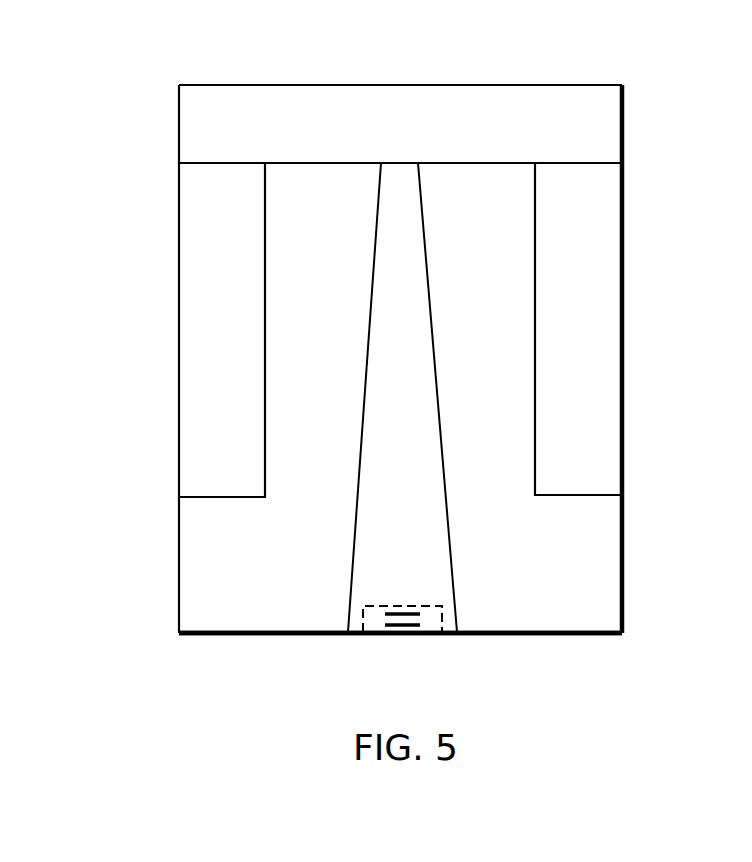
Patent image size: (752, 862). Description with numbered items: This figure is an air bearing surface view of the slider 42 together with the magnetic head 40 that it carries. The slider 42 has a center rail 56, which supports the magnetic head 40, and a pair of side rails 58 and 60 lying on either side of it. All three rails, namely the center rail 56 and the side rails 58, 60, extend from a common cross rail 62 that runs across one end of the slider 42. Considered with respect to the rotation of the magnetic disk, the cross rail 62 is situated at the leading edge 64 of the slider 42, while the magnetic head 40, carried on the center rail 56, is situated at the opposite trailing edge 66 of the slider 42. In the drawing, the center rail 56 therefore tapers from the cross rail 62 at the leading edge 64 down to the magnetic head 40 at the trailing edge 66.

The magnetic head 40 is at (374, 639).
The slider 42 is at (180, 576).
The center rail 56 is at (388, 275).
The side rail 58 is at (193, 236).
The side rail 60 is at (596, 235).
The cross rail 62 is at (312, 95).
The leading edge 64 is at (468, 85).
The trailing edge 66 is at (522, 637).